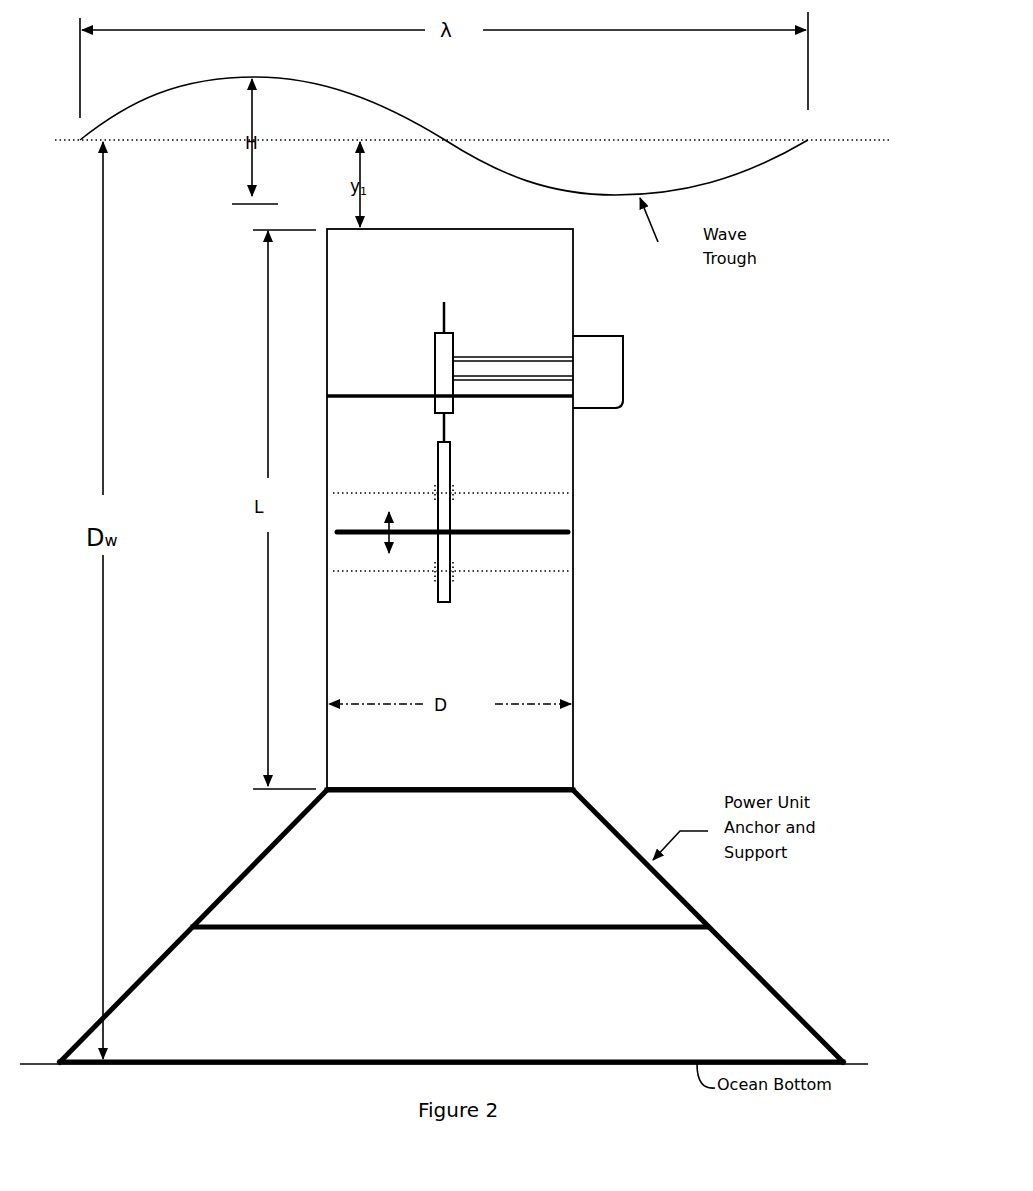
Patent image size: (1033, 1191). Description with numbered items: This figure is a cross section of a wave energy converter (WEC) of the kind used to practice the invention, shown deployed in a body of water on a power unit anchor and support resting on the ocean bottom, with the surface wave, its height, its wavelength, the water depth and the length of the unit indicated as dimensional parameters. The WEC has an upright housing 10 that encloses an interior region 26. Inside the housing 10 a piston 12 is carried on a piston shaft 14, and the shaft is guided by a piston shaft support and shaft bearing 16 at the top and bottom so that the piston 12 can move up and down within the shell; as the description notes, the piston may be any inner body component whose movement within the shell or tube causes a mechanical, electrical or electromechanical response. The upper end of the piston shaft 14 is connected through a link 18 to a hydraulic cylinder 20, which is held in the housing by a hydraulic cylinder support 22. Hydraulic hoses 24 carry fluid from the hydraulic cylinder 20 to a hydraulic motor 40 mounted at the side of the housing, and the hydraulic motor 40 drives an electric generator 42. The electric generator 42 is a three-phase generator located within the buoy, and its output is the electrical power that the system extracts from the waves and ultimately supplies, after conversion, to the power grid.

The power unit housing 10 is at (512, 508).
The piston 12 is at (527, 511).
The piston shaft 14 is at (596, 522).
The piston shaft support and shaft bearing, top and bottom 16 is at (582, 579).
The piston shaft to hydraulic cylinder rod 18 is at (296, 453).
The hydraulic cylinder 20 is at (437, 345).
The hydraulic cylinder support 22 is at (356, 385).
The hydraulic hoses 24 is at (632, 395).
The housing chamber 26 is at (494, 276).
The hydraulic motor 40 is at (694, 340).
The electric generator 42 is at (792, 316).